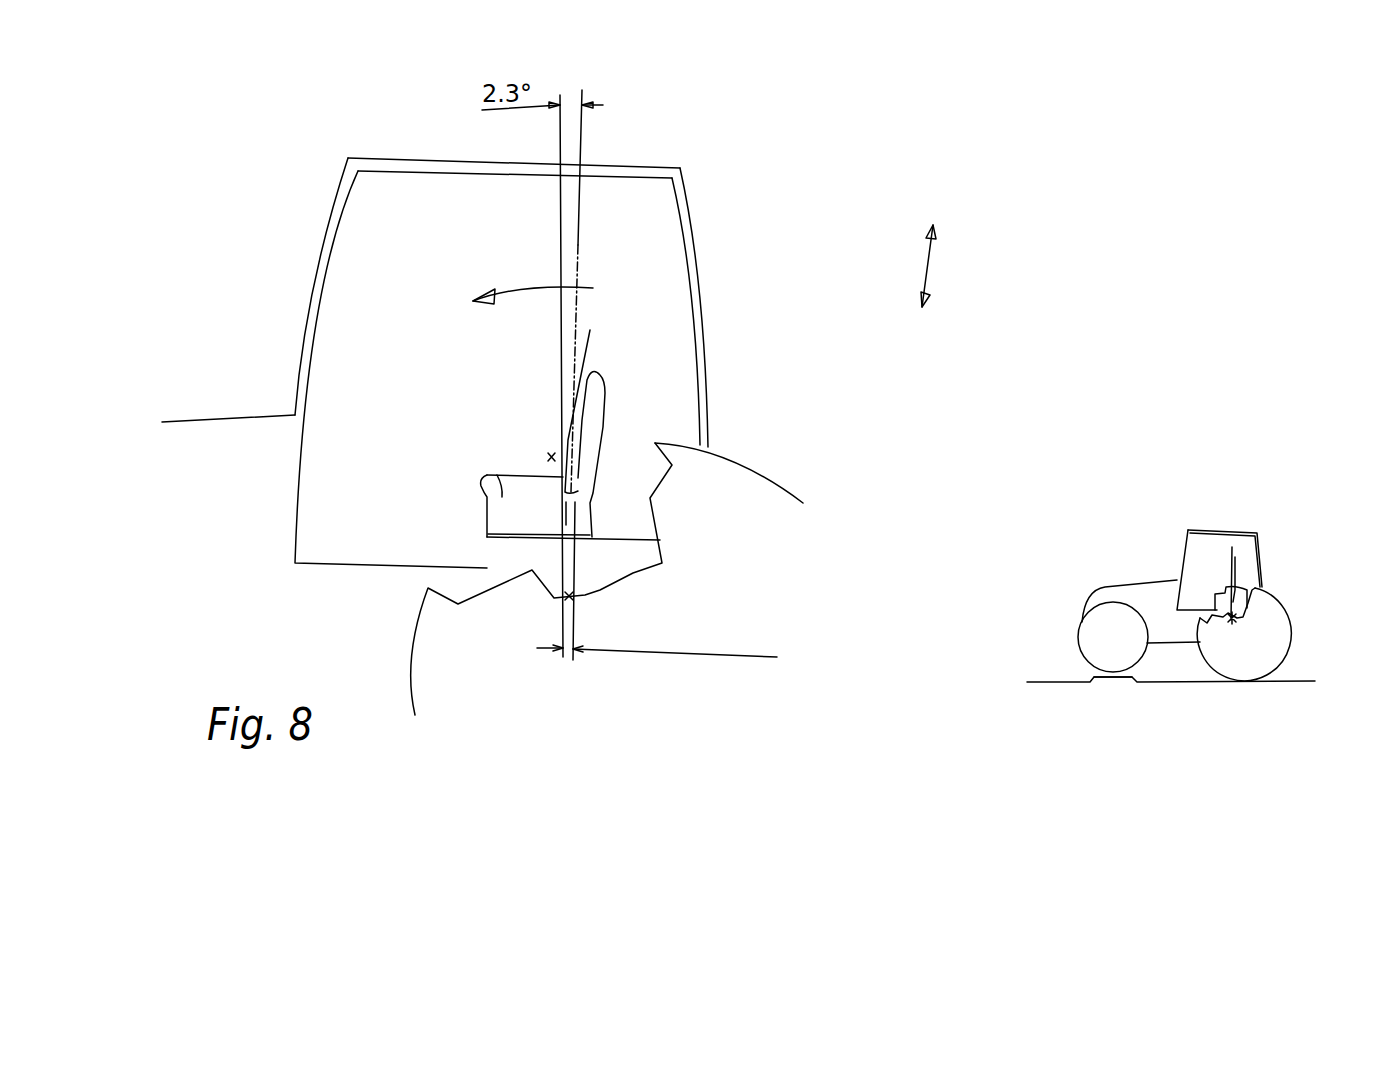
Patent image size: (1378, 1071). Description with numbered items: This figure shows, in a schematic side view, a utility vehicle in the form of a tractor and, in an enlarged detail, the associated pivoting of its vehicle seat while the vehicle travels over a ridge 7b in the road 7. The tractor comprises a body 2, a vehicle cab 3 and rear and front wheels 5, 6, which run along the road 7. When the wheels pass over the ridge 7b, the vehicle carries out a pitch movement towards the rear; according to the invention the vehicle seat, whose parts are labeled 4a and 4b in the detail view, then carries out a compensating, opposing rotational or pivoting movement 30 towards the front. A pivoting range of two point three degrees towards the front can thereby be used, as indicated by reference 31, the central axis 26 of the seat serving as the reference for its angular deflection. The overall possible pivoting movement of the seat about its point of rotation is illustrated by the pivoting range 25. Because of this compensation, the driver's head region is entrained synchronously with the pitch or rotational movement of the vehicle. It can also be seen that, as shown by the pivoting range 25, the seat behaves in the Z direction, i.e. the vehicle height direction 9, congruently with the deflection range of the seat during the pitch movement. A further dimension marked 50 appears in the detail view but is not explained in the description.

The body 2 is at (1147, 590).
The vehicle cab 3 is at (698, 302).
The seat part 4a is at (503, 477).
The backrest 4b is at (588, 415).
The rear wheel 5 is at (733, 488).
The front wheel 6 is at (1093, 633).
The road 7 is at (1050, 681).
The ridge 7b is at (1108, 678).
The vehicle height direction 9 is at (927, 268).
The pivoting range 25 is at (578, 491).
The central axis 26 is at (573, 322).
The pivoting movement 30 is at (530, 288).
The pivoting range towards the front 31 is at (572, 94).
The offset distance 50 is at (657, 624).